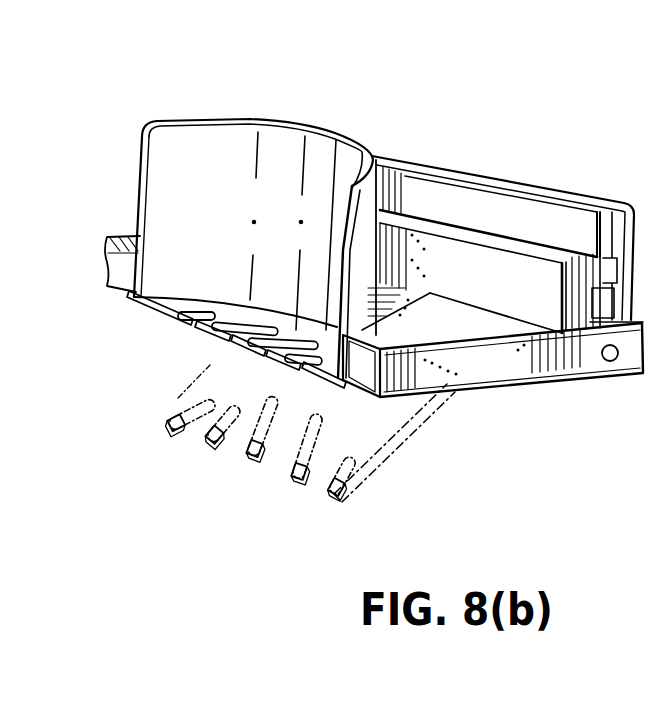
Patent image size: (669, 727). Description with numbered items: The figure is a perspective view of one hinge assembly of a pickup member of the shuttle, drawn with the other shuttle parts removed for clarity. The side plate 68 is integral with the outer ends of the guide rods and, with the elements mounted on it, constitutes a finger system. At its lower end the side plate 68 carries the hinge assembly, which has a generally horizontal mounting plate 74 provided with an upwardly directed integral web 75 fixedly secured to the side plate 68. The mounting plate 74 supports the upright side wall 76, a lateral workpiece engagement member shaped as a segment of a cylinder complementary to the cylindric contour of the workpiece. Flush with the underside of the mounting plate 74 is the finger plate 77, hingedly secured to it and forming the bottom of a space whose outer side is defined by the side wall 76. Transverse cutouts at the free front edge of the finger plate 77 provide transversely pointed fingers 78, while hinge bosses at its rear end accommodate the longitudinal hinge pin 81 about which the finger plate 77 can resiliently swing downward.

The side plate 68 is at (487, 202).
The mounting plate 74 is at (493, 368).
The web 75 is at (505, 267).
The upright side wall 76 is at (215, 140).
The finger plate 77 is at (150, 313).
The fingers 78 is at (237, 367).
The hinge pin 81 is at (610, 363).